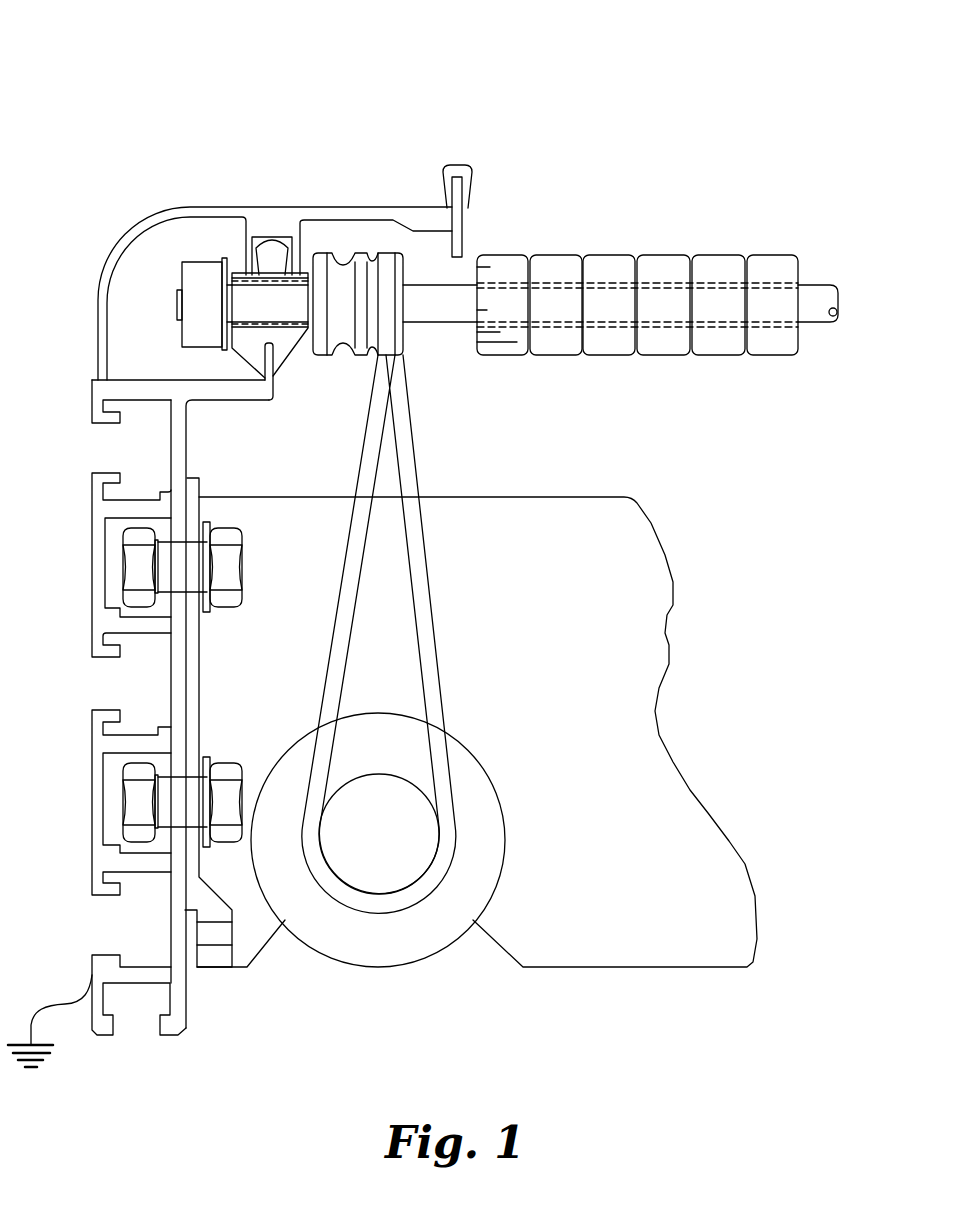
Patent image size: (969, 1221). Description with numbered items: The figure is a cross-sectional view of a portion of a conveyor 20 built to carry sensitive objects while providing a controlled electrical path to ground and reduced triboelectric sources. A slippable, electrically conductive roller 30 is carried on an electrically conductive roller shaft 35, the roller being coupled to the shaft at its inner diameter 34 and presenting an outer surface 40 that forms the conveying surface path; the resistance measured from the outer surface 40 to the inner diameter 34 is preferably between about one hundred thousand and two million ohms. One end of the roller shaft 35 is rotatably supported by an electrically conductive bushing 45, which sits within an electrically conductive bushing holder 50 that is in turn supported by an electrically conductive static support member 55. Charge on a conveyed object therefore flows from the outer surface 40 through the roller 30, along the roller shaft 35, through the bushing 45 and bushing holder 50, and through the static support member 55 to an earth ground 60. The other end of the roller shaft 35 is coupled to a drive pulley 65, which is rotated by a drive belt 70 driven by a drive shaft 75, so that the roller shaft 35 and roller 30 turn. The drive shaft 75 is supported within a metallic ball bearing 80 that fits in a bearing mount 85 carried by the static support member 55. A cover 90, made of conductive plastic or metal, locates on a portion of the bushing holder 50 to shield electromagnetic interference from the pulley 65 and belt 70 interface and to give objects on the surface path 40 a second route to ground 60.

The conveyor 20 is at (102, 107).
The electrically conductive roller 30 is at (553, 273).
The inner diameter 34 is at (720, 285).
The electrically conductive roller shaft 35 is at (259, 308).
The outer surface 40 is at (622, 255).
The electrically conductive bushing 45 is at (237, 277).
The electrically conductive bushing holder 50 is at (273, 247).
The electrically conductive static support member 55 is at (103, 658).
The earth ground 60 is at (38, 1010).
The drive pulley 65 is at (352, 270).
The drive belt 70 is at (407, 475).
The drive shaft 75 is at (383, 833).
The metallic ball bearing 80 is at (420, 920).
The bearing mount 85 is at (624, 751).
The cover 90 is at (100, 287).